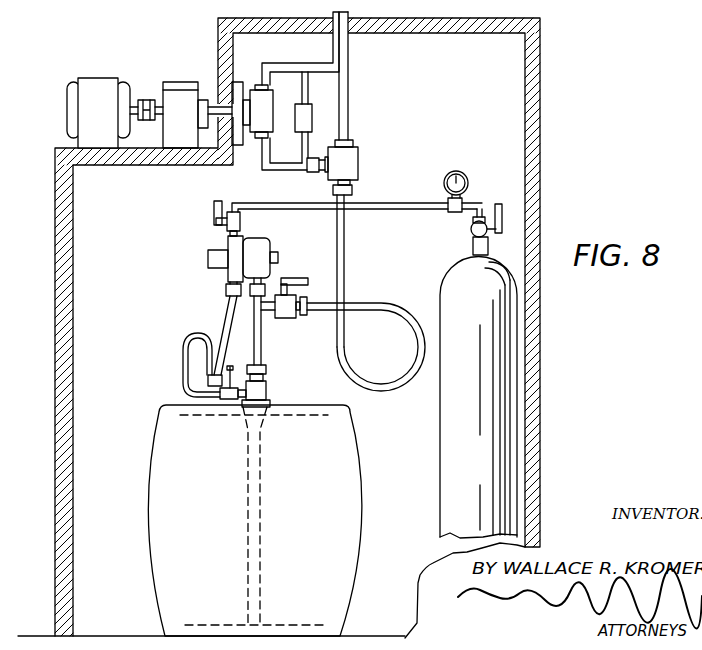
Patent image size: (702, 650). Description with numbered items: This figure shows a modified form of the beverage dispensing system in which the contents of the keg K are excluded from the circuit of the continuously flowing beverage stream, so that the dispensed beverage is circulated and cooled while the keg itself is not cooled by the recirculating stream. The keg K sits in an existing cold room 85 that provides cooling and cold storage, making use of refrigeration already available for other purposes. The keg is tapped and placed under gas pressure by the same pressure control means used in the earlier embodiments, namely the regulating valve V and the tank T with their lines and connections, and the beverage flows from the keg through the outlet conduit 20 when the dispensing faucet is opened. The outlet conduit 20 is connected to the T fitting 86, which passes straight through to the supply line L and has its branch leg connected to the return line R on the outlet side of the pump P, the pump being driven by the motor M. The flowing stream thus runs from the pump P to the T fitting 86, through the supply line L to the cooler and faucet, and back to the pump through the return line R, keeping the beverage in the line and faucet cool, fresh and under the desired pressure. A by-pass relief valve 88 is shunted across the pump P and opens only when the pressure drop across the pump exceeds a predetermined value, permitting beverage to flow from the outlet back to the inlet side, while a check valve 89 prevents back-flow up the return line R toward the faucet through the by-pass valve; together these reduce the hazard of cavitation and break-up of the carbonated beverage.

The cold room 85 is at (54, 360).
The motor M is at (98, 113).
The pump P is at (258, 100).
The return line R is at (318, 63).
The by-pass relief valve 88 is at (310, 110).
The check valve 89 is at (309, 158).
The supply line L is at (349, 108).
The T fitting 86 is at (354, 158).
The regulating valve V is at (225, 252).
The outlet conduit 20 is at (381, 303).
The tank T is at (478, 387).
The keg K is at (168, 421).